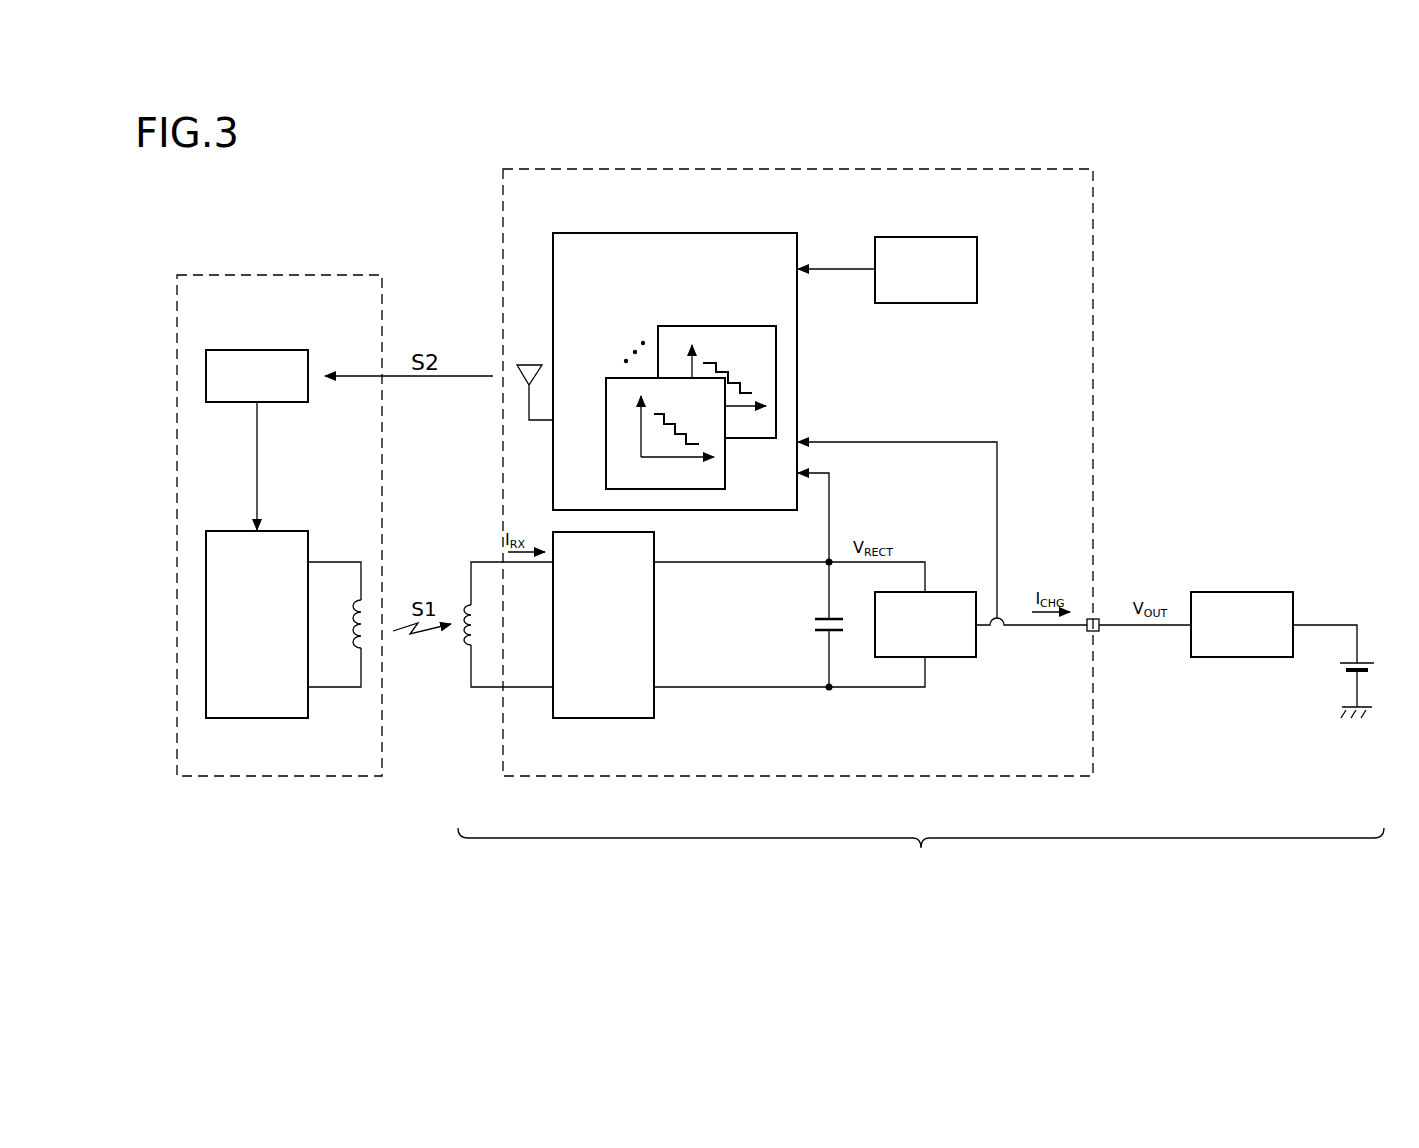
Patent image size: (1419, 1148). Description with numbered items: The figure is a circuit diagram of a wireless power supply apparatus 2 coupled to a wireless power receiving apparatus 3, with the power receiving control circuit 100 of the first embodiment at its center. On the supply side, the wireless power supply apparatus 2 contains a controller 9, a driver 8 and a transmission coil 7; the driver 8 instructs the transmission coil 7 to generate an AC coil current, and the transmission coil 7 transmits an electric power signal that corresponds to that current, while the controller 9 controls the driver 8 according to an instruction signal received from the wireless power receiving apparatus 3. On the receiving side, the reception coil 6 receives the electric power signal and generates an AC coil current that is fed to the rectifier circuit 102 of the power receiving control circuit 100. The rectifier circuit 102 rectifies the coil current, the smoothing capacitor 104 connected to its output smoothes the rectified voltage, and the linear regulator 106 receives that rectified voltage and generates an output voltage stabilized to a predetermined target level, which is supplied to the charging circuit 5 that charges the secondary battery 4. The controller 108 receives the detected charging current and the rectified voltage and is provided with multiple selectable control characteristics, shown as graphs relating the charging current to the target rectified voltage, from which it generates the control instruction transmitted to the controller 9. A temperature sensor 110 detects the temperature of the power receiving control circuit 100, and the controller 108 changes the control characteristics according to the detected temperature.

The wireless power supply apparatus 2 is at (232, 777).
The wireless power receiving apparatus 3 is at (921, 854).
The secondary battery 4 is at (1380, 666).
The charging circuit 5 is at (1243, 592).
The reception coil 6 is at (463, 646).
The transmission coil 7 is at (349, 650).
The driver 8 is at (258, 718).
The controller 9 is at (277, 350).
The power receiving control circuit 100 is at (772, 777).
The rectifier circuit 102 is at (601, 718).
The smoothing capacitor 104 is at (812, 626).
The linear regulator 106 is at (950, 657).
The controller 108 is at (700, 233).
The temperature sensor 110 is at (935, 237).